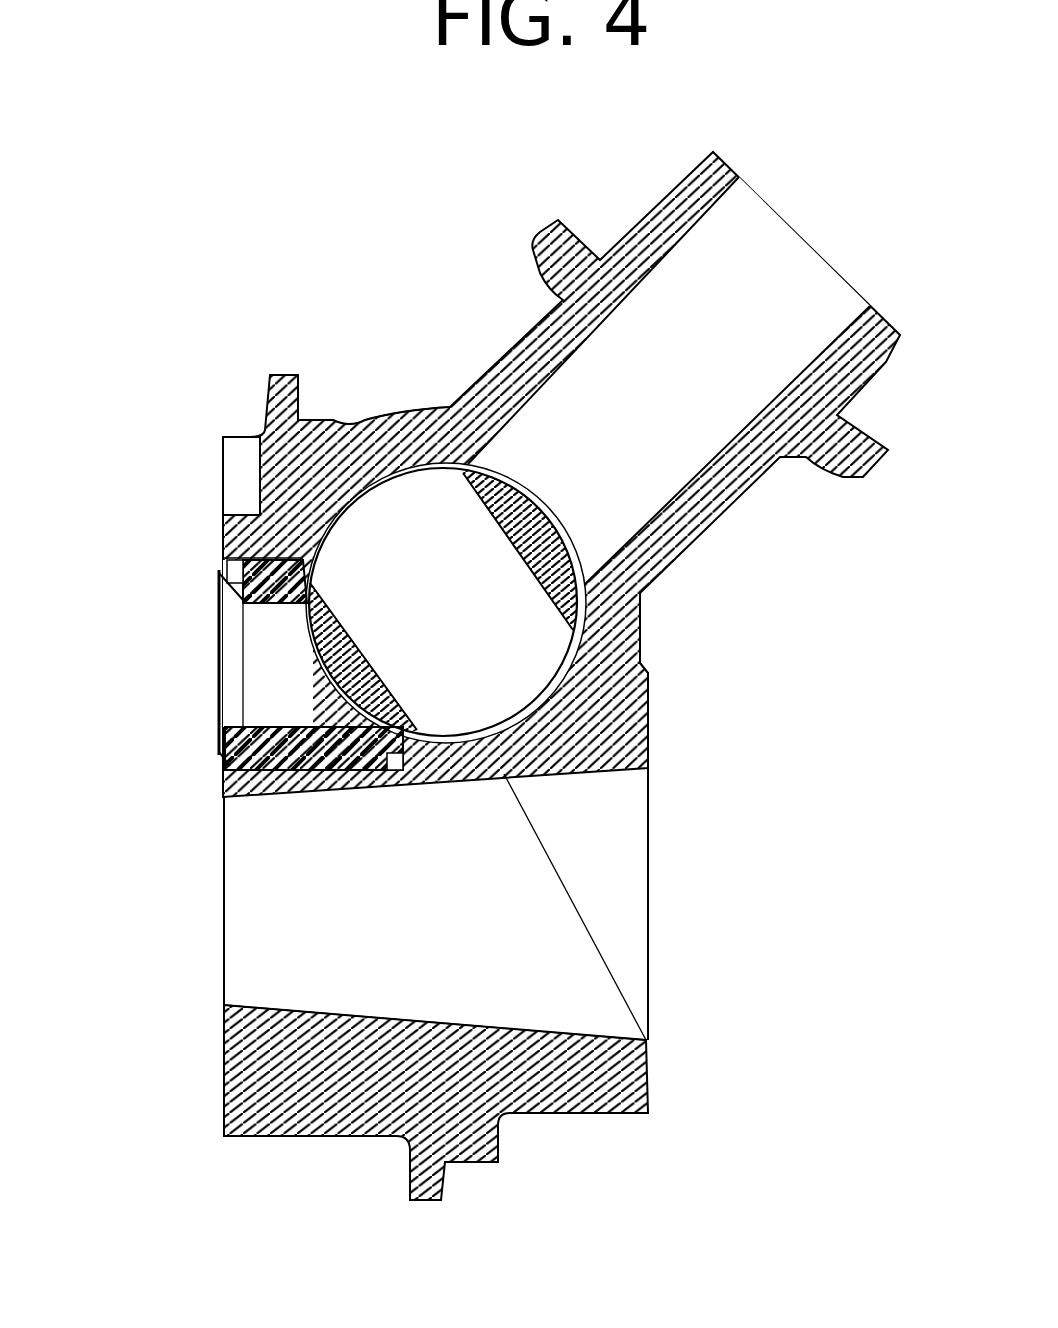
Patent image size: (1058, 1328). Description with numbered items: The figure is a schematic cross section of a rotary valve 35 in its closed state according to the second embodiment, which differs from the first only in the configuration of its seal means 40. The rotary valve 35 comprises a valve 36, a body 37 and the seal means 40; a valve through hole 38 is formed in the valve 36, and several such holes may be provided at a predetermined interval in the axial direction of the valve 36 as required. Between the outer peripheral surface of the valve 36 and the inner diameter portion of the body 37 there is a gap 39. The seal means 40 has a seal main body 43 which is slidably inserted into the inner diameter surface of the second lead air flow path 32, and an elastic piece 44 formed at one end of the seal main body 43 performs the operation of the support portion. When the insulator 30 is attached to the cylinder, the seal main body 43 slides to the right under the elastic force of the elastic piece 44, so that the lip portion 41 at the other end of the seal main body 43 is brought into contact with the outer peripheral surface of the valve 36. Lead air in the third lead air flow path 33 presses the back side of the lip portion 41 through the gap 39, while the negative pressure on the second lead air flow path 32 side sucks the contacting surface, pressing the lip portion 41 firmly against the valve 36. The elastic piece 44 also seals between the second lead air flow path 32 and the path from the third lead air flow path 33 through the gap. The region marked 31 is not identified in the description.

The insulator 30 is at (330, 420).
The lower body portion 31 is at (319, 963).
The second lead air flow path 32 is at (262, 678).
The third lead air flow path 33 is at (737, 275).
The rotary valve 35 is at (387, 399).
The valve 36 is at (540, 540).
The body 37 is at (613, 697).
The valve through hole 38 is at (470, 673).
The gap 39 is at (504, 774).
The seal means 40 is at (216, 760).
The lip portion 41 is at (646, 1040).
The seal main body 43 is at (300, 724).
The elastic piece 44 is at (221, 757).